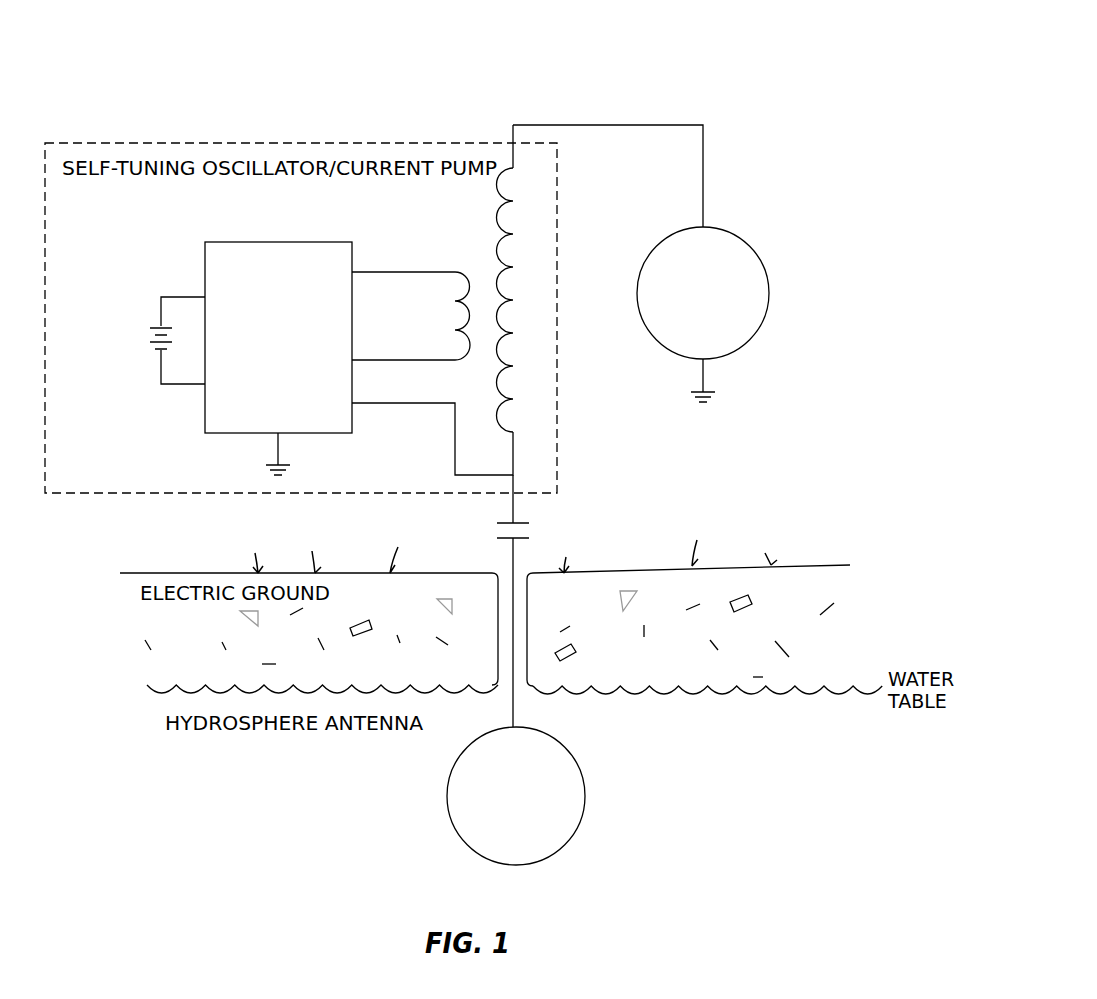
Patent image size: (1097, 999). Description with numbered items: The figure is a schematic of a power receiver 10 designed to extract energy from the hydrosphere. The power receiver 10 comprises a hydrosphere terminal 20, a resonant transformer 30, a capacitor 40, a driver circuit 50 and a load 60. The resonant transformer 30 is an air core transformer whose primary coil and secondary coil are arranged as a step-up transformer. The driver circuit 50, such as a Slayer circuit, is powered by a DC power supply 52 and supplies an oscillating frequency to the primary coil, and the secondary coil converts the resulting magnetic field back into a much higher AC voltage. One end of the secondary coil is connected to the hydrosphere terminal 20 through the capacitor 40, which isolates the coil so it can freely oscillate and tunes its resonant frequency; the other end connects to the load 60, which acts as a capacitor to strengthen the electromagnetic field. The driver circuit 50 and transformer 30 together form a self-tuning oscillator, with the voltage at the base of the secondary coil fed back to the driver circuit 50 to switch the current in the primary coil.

The power receiver 10 is at (660, 50).
The hydrosphere terminal 20 is at (578, 764).
The resonant transformer 30 is at (451, 233).
The capacitor 40 is at (556, 521).
The driver circuit 50 is at (310, 242).
The DC power supply 52 is at (156, 322).
The load 60 is at (752, 250).